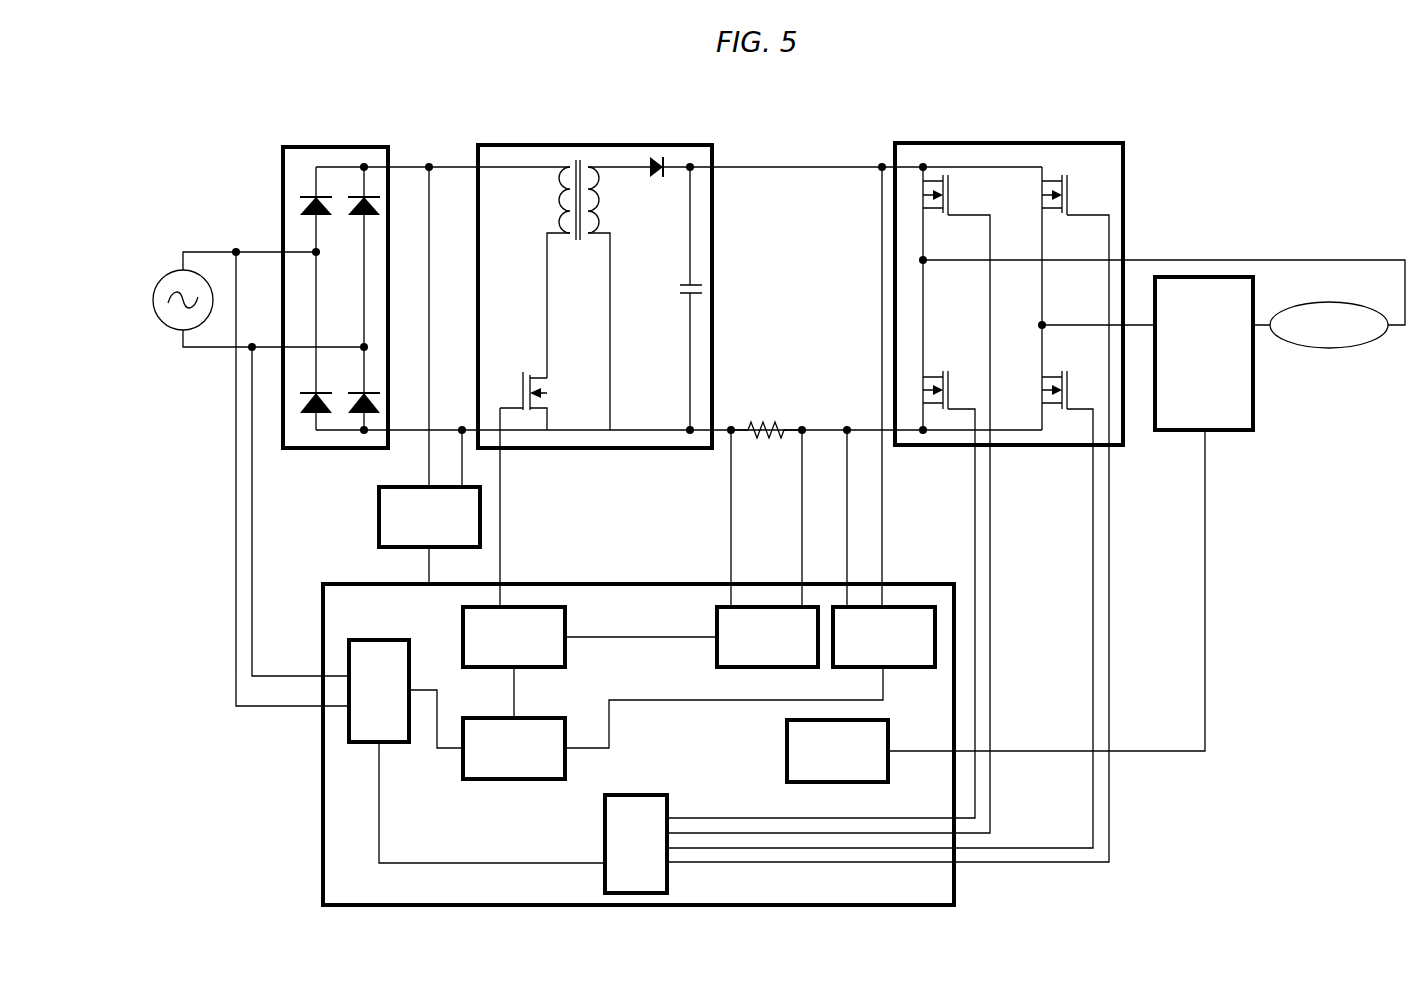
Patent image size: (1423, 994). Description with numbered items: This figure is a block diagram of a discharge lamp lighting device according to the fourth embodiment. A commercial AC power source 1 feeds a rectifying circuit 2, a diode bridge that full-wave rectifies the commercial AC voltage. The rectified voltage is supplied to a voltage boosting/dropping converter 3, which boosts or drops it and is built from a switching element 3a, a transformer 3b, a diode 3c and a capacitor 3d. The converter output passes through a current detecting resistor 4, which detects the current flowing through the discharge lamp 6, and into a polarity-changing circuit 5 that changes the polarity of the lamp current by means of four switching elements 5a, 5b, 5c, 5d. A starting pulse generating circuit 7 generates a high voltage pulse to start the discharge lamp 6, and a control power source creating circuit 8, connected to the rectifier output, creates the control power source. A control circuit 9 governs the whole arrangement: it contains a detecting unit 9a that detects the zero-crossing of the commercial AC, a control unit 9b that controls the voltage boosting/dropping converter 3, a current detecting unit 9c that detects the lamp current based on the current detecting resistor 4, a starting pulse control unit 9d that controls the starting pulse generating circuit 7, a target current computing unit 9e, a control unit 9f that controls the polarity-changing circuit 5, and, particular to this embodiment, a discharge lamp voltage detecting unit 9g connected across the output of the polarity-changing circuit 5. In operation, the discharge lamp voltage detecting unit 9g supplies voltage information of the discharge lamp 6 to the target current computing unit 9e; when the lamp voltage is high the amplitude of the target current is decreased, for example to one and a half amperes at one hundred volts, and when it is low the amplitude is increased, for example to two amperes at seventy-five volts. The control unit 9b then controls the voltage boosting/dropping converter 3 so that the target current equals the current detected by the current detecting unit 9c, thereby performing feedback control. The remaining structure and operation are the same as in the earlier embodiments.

The commercial AC power source 1 is at (178, 262).
The rectifying circuit 2 is at (310, 147).
The voltage boosting/dropping converter 3 is at (554, 145).
The switching element 3a is at (523, 388).
The transformer 3b is at (562, 198).
The diode 3c is at (660, 178).
The capacitor 3d is at (684, 290).
The current detecting resistor 4 is at (763, 421).
The polarity-changing circuit 5 is at (982, 143).
The switching element 5a is at (950, 196).
The switching element 5b is at (950, 406).
The switching element 5c is at (1069, 196).
The switching element 5d is at (1069, 406).
The discharge lamp 6 is at (1334, 349).
The starting pulse generating circuit 7 is at (1246, 432).
The control power source creating circuit 8 is at (379, 518).
The control circuit 9 is at (610, 584).
The detecting unit 9a is at (366, 744).
The control unit 9b is at (566, 612).
The current detecting unit 9c is at (717, 614).
The starting pulse control unit 9d is at (787, 742).
The target current computing unit 9e is at (531, 718).
The control unit 9f is at (645, 795).
The discharge lamp voltage detecting unit 9g is at (915, 667).